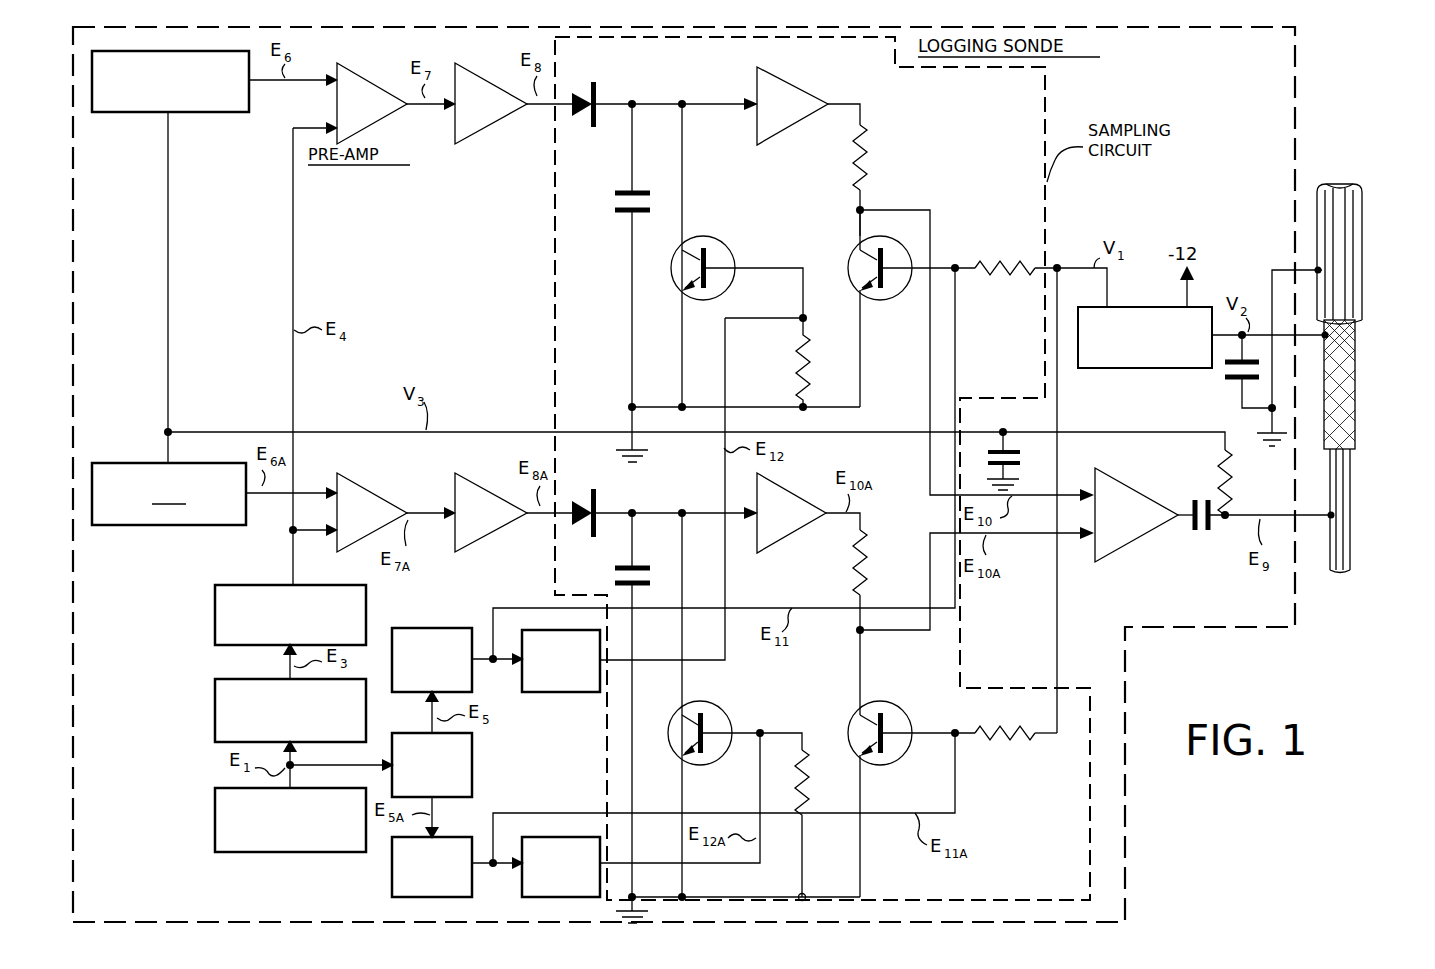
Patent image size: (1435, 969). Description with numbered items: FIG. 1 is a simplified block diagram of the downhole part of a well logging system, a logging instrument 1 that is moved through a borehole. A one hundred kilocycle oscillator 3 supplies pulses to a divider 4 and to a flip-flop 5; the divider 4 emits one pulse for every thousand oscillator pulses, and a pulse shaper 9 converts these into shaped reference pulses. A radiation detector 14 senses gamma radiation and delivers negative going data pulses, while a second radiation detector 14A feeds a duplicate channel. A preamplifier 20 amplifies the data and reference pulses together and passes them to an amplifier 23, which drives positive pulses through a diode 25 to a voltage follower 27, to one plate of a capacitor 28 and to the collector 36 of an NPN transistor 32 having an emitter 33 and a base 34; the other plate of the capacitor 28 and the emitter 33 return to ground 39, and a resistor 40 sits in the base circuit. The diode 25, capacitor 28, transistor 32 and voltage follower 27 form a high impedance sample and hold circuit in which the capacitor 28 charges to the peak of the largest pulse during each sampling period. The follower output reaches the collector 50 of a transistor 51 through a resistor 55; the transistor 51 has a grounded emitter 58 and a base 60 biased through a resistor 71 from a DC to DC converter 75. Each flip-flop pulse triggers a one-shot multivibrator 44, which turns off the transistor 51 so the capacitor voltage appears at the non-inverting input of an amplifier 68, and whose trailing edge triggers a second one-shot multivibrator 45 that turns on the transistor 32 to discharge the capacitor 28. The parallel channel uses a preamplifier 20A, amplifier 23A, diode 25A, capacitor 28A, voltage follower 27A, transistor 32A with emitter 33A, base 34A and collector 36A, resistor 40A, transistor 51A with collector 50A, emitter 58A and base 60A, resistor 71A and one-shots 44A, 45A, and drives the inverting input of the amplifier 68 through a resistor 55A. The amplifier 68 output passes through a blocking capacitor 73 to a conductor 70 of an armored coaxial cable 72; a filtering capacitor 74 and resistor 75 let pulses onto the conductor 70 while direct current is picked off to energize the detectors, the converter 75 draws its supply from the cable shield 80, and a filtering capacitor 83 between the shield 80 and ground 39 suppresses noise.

The logging instrument 1 is at (1130, 846).
The 100 KC oscillator 3 is at (216, 844).
The divider 4 is at (214, 706).
The flip-flop 5 is at (472, 766).
The pulse shaper 9 is at (216, 614).
The radiation detector 14 is at (205, 112).
The radiation detector 14A is at (169, 494).
The preamplifier 20 is at (356, 82).
The preamplifier 20A is at (370, 490).
The amplifier 23 is at (483, 118).
The amplifier 23A is at (483, 520).
The diode 25 is at (596, 100).
The diode 25A is at (598, 506).
The voltage follower amplifier 27 is at (790, 88).
The voltage follower 27A is at (785, 534).
The capacitor 28 is at (622, 185).
The capacitor 28A is at (620, 576).
The NPN transistor 32 is at (725, 250).
The transistor 32A is at (730, 726).
The emitter 33 is at (682, 286).
The emitter 33A is at (682, 785).
The base 34 is at (714, 282).
The base 34A is at (704, 748).
The collector 36 is at (690, 250).
The collector 36A is at (688, 716).
The ground 39 is at (646, 444).
The resistor 40 is at (800, 348).
The resistor 40A is at (794, 776).
The one-shot multivibrator 44 is at (432, 628).
The one-shot multivibrator 44A is at (392, 868).
The one-shot multivibrator 45 is at (568, 692).
The one-shot multivibrator 45A is at (540, 889).
The collector 50 is at (856, 218).
The collector 50A is at (865, 718).
The NPN transistor 51 is at (889, 244).
The transistor 51A is at (902, 728).
The resistor 55 is at (867, 156).
The resistor 55A is at (856, 542).
The emitter 58 is at (862, 298).
The emitter 58A is at (860, 794).
The base 60 is at (882, 280).
The base 60A is at (887, 744).
The amplifier 68 is at (1134, 536).
The conductor 70 is at (1352, 558).
The resistor 71 is at (1006, 268).
The resistor 71A is at (1008, 742).
The armored coaxial cable 72 is at (1384, 170).
The blocking capacitor 73 is at (1192, 504).
The filtering capacitor 74 is at (994, 452).
The DC to DC converter 75 is at (1108, 368).
The shield 80 is at (1356, 396).
The filtering capacitor 83 is at (1230, 394).